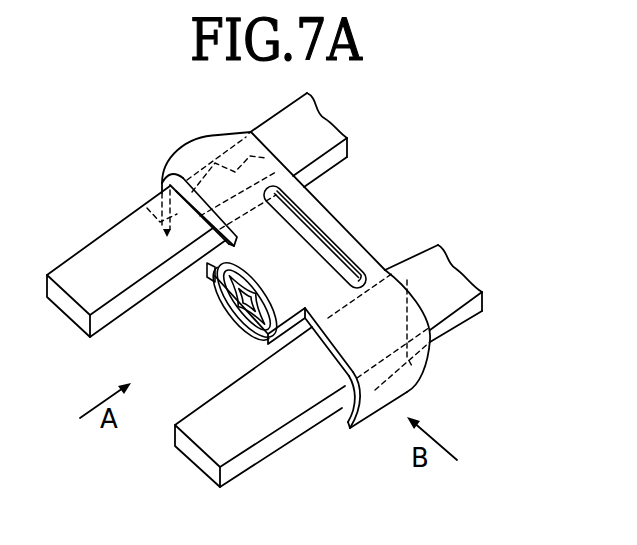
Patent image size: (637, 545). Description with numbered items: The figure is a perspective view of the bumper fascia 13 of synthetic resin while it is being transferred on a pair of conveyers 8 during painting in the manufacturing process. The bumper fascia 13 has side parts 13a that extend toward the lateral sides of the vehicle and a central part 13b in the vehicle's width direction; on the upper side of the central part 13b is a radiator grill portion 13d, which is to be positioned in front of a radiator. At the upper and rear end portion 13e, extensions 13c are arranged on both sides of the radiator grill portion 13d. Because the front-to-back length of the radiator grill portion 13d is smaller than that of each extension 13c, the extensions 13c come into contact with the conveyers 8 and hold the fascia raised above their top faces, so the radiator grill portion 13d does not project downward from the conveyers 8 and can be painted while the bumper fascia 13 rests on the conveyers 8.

The conveyer 8 is at (79, 266).
The bumper fascia 13 is at (371, 251).
The side part 13a is at (158, 214).
The central part 13b is at (297, 256).
The extension 13c is at (185, 183).
The radiator grill portion 13d is at (229, 309).
The upper and rear end portion 13e is at (349, 426).